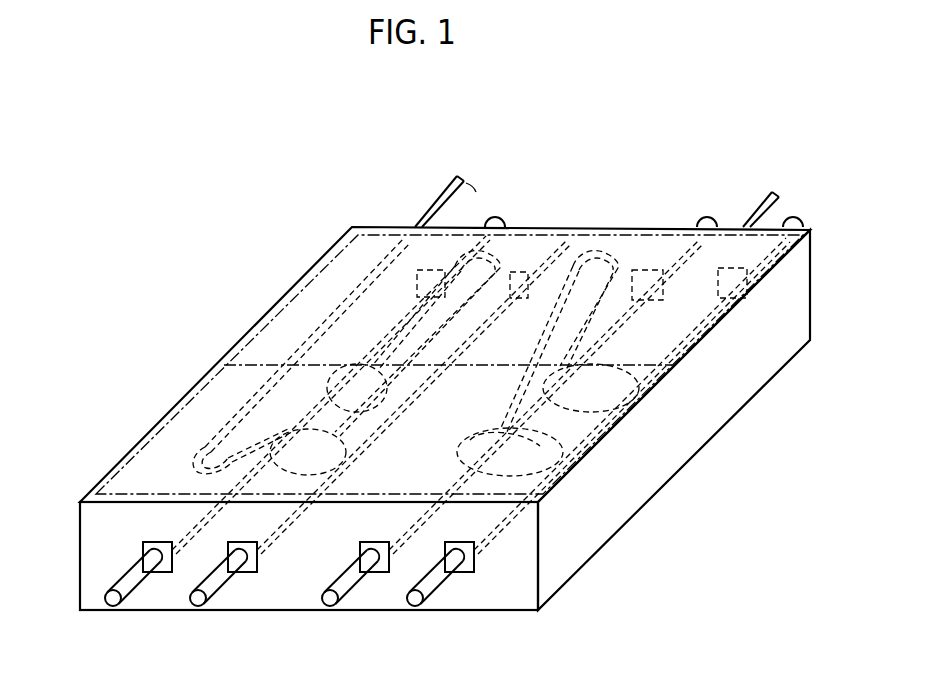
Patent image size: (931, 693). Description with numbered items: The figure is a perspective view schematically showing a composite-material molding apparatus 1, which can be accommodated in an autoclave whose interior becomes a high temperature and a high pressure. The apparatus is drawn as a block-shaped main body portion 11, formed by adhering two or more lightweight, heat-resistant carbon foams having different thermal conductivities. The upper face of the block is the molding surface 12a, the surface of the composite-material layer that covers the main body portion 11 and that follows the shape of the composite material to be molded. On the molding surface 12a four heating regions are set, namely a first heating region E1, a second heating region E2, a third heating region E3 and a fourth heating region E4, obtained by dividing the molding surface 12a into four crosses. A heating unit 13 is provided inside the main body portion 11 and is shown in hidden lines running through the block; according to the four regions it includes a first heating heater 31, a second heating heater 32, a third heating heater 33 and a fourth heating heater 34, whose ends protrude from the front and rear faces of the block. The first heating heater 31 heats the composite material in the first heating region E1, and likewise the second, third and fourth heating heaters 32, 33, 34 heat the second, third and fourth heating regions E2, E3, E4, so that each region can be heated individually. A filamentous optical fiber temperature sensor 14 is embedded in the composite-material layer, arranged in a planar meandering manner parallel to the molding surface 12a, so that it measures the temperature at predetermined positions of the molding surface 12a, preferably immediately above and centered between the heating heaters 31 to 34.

The molding apparatus 1 is at (274, 204).
The main body portion 11 is at (74, 554).
The molding surface 12a is at (100, 492).
The heating unit 13 is at (450, 403).
The optical fiber temperature sensor 14 is at (433, 210).
The first heating heater 31 is at (494, 220).
The second heating heater 32 is at (716, 214).
The third heating heater 33 is at (112, 601).
The fourth heating heater 34 is at (326, 601).
The first heating region E1 is at (433, 250).
The second heating region E2 is at (597, 248).
The third heating region E3 is at (190, 480).
The fourth heating region E4 is at (512, 480).